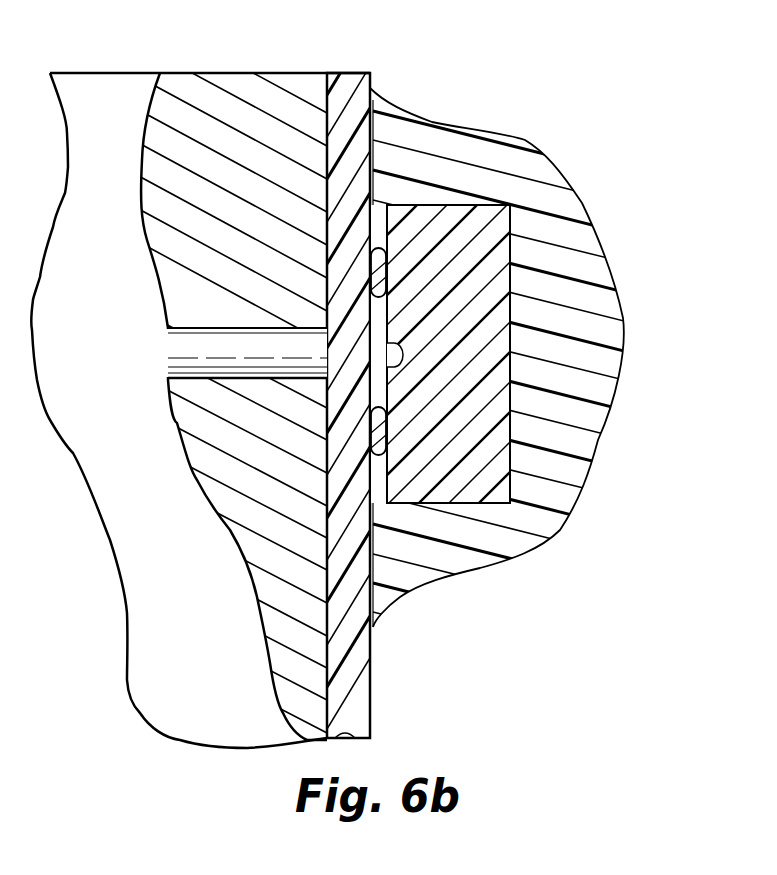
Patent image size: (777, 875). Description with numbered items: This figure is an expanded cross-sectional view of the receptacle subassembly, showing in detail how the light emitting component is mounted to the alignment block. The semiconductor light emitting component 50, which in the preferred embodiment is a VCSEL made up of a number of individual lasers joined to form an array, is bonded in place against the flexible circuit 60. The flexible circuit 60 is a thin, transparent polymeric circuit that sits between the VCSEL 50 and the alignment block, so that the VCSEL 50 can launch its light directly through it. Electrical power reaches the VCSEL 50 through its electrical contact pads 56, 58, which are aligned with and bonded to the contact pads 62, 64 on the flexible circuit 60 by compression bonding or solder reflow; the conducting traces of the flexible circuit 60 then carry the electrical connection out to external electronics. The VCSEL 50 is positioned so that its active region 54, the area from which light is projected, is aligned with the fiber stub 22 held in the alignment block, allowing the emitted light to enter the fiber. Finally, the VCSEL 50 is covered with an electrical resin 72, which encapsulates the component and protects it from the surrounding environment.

The fiber stub 22 is at (183, 345).
The semiconductor light emitting component 50 is at (493, 235).
The active region 54 is at (394, 346).
The electrical contact pad 56 is at (380, 246).
The electrical contact pad 58 is at (378, 460).
The flexible circuit 60 is at (372, 698).
The contact pad 62 is at (386, 272).
The contact pad 64 is at (386, 432).
The electrical resin 72 is at (567, 490).